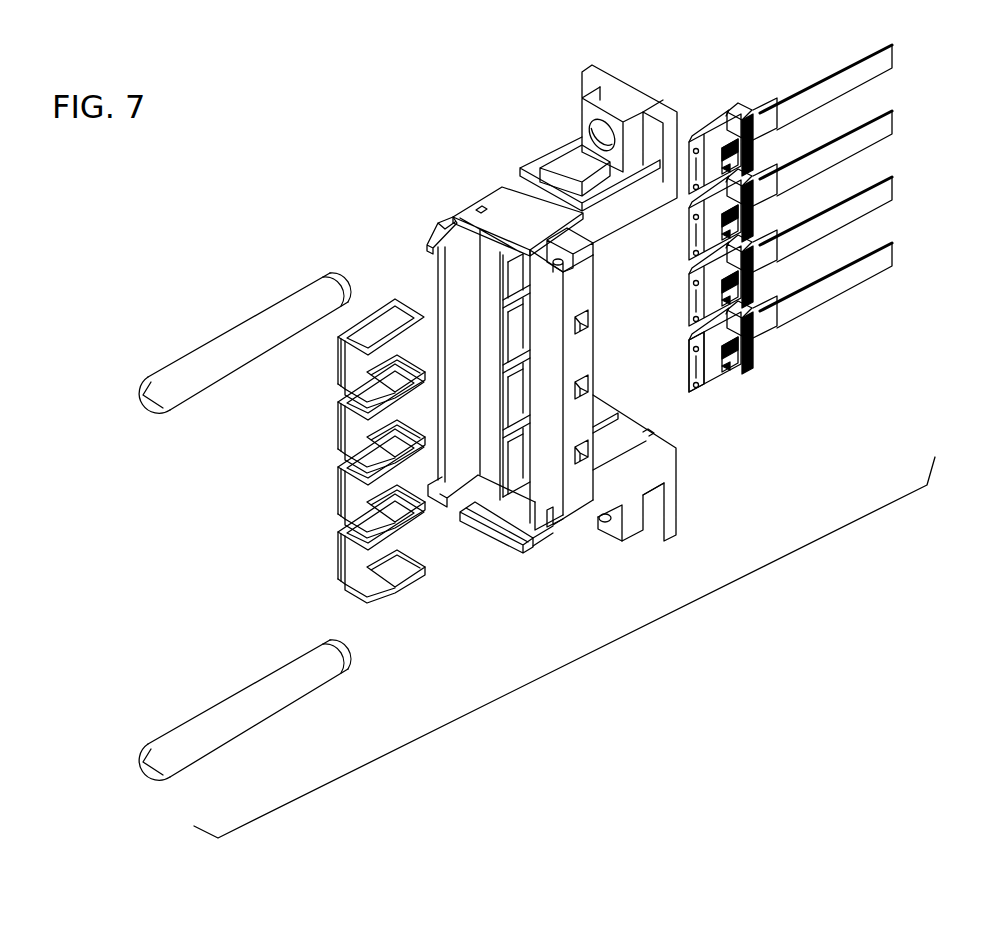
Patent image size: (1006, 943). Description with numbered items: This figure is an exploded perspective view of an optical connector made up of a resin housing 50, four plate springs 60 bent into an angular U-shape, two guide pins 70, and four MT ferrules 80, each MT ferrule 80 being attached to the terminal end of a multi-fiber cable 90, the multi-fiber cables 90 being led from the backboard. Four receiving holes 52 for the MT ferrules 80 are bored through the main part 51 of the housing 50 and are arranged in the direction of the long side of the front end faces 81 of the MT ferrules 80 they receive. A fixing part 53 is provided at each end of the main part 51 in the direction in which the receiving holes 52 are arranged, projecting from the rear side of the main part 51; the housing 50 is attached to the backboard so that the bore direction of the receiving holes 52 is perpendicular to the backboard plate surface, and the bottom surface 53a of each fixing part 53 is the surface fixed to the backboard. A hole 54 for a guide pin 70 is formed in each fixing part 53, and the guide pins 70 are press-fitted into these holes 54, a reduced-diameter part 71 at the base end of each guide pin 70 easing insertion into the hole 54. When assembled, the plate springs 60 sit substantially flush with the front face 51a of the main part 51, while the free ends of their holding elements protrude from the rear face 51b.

The housing 50 is at (492, 187).
The main part 51 is at (553, 493).
The front face 51a is at (485, 255).
The rear face 51b is at (595, 330).
The receiving holes 52 is at (520, 428).
The fixing part 53 is at (620, 93).
The bottom surface 53a is at (665, 100).
The hole 54 is at (592, 133).
The plate springs 60 is at (333, 538).
The guide pins 70 is at (205, 350).
The reduced-diameter part 71 is at (336, 268).
The MT ferrules 80 is at (718, 305).
The front end faces 81 is at (688, 369).
The multi-fiber cable 90 is at (888, 252).